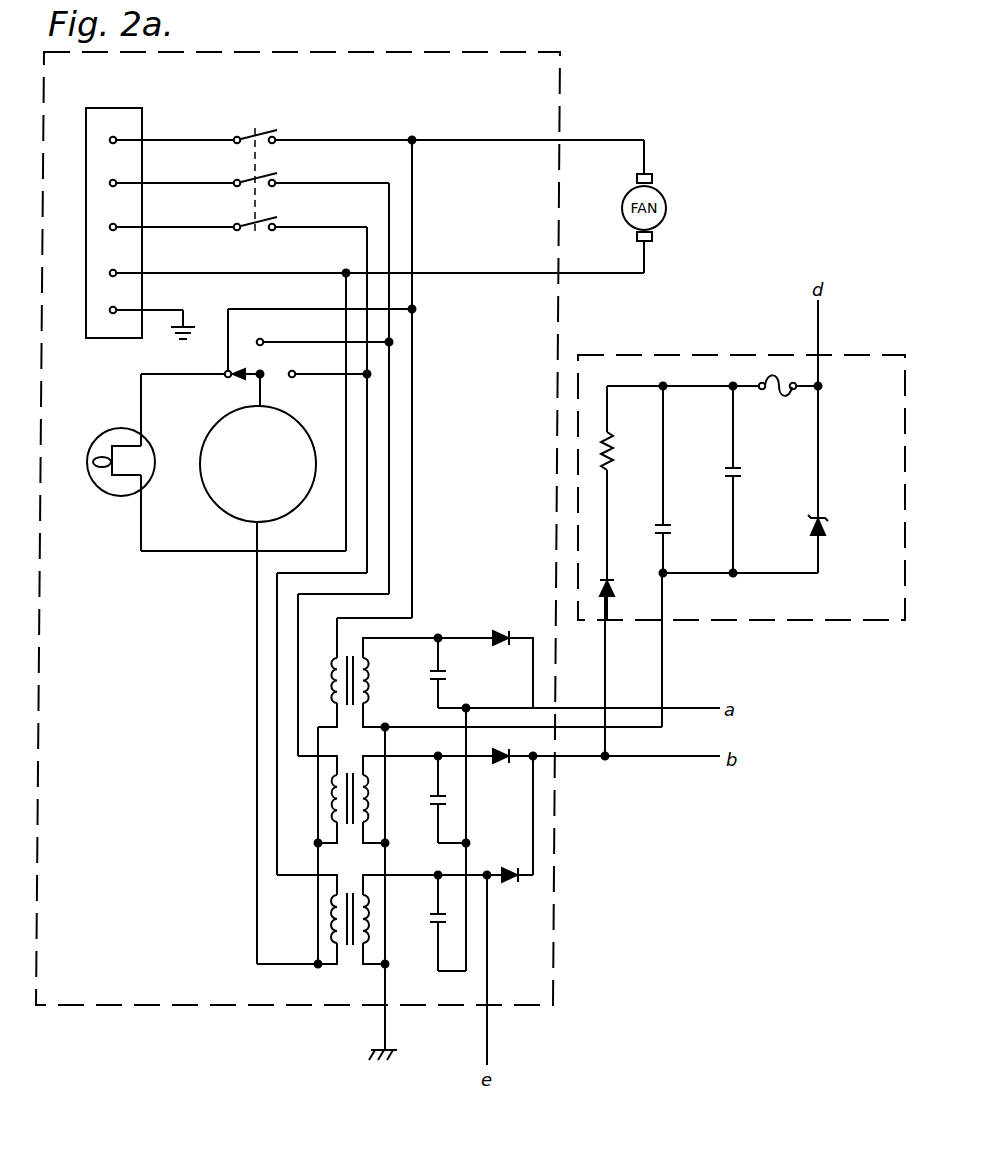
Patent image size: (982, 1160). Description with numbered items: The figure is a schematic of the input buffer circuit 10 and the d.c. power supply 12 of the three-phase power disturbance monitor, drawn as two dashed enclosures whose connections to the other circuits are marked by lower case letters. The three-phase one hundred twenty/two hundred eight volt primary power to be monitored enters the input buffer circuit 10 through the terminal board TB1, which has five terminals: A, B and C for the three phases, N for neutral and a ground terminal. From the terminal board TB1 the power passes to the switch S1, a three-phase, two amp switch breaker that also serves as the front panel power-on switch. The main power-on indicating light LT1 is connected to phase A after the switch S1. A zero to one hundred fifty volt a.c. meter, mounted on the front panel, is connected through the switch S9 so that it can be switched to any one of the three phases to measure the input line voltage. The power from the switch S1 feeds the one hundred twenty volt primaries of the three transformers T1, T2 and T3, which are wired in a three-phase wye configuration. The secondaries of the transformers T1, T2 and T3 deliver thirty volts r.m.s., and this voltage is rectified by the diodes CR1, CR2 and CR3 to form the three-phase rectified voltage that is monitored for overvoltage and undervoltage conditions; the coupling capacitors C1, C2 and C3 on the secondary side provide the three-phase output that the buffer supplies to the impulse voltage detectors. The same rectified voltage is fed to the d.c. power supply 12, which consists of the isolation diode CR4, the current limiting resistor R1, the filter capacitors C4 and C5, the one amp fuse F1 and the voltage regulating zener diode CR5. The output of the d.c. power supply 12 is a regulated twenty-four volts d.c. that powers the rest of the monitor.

The input buffer circuit 10 is at (375, 52).
The d.c. power supply 12 is at (697, 355).
The terminal board TB1 is at (114, 214).
The switch S1 is at (255, 163).
The switch S9 is at (260, 370).
The main power-on indicating light LT1 is at (99, 473).
The transformer T1 is at (371, 672).
The transformer T2 is at (367, 799).
The transformer T3 is at (357, 919).
The coupling capacitor C1 is at (426, 673).
The coupling capacitor C2 is at (426, 799).
The coupling capacitor C3 is at (426, 923).
The diode CR1 is at (496, 648).
The diode CR2 is at (497, 766).
The diode CR3 is at (507, 885).
The fuse F1 is at (774, 395).
The current limiting resistor R1 is at (624, 452).
The filter capacitor C4 is at (683, 532).
The filter capacitor C5 is at (753, 474).
The isolation diode CR4 is at (623, 589).
The zener diode CR5 is at (839, 530).